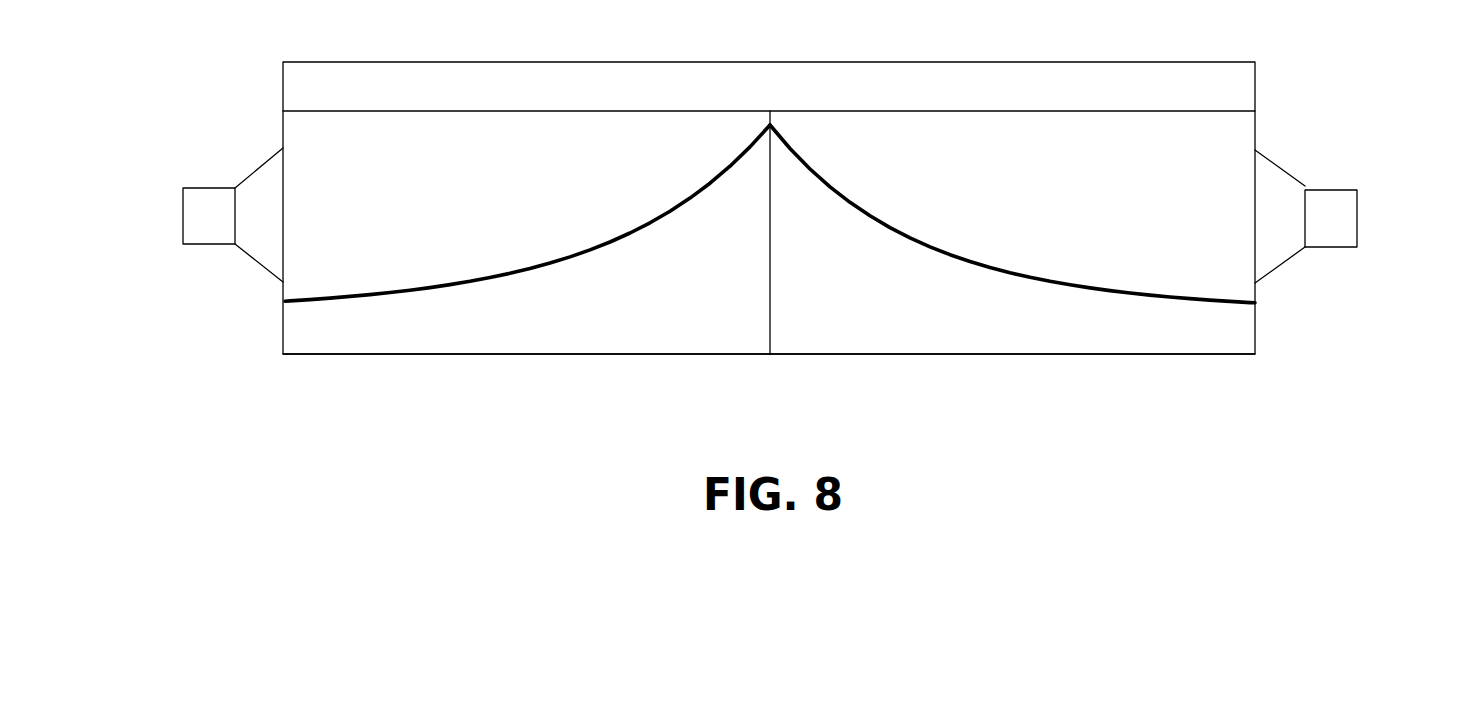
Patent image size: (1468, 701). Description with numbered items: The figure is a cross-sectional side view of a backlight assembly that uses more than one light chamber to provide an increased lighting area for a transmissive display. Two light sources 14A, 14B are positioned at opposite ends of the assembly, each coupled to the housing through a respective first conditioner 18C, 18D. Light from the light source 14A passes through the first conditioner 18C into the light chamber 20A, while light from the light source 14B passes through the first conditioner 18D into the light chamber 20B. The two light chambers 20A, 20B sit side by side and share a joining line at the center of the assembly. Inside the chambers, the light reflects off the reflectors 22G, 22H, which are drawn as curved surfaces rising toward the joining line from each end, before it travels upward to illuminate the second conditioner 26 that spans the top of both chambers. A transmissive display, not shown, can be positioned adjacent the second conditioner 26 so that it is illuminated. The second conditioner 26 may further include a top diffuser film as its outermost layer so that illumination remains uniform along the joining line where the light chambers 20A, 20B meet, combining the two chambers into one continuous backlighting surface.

The second conditioner 26 is at (1255, 82).
The first conditioner 18C is at (260, 165).
The first conditioner 18D is at (1280, 167).
The light source 14A is at (200, 244).
The light source 14B is at (1335, 247).
The reflector 22G is at (567, 253).
The reflector 22H is at (968, 257).
The light chamber 20A is at (480, 355).
The light chamber 20B is at (980, 355).